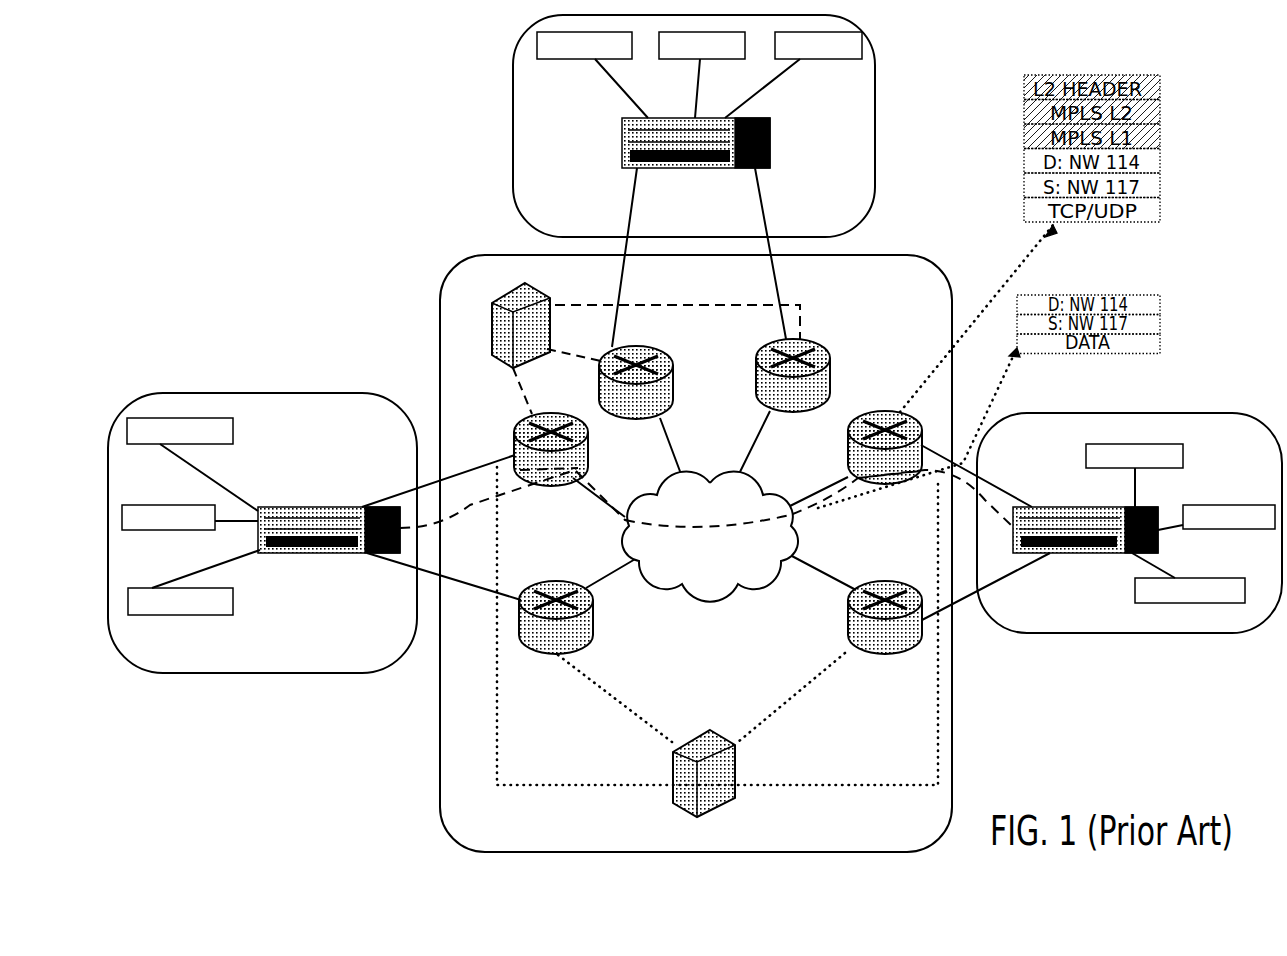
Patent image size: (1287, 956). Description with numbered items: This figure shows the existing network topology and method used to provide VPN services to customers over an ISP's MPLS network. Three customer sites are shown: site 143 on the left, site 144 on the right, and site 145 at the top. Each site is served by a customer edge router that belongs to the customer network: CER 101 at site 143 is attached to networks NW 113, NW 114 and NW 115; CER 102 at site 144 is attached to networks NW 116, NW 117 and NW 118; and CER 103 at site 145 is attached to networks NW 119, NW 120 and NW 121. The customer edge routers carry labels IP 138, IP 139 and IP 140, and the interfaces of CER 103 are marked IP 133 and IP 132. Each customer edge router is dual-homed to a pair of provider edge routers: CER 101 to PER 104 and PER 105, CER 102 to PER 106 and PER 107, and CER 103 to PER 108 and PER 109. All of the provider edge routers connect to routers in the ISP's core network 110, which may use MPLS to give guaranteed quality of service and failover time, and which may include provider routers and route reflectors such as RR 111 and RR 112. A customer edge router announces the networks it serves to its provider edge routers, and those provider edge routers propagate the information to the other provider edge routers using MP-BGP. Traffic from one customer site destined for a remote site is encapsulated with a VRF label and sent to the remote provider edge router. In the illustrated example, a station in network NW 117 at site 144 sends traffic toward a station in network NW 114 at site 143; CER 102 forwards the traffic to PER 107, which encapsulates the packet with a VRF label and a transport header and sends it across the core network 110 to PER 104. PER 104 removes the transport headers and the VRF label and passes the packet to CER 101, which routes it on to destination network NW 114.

The customer edge router 101 is at (329, 544).
The customer edge router 102 is at (1085, 544).
The customer edge router 103 is at (696, 157).
The provider edge router 104 is at (551, 464).
The provider edge router 105 is at (556, 630).
The provider edge router 106 is at (885, 632).
The provider edge router 107 is at (885, 463).
The provider edge router 108 is at (793, 390).
The provider edge router 109 is at (636, 396).
The core network 110 is at (710, 536).
The route reflector 111 is at (522, 314).
The route reflector 112 is at (704, 787).
The network 113 is at (192, 464).
The network 114 is at (190, 517).
The network 115 is at (194, 582).
The network 116 is at (1134, 475).
The network 117 is at (1216, 517).
The network 118 is at (1188, 578).
The network 119 is at (584, 45).
The network 120 is at (702, 45).
The network 121 is at (818, 45).
The IP address 132 is at (800, 186).
The IP address 133 is at (591, 186).
The IP address 138 is at (312, 595).
The IP address 139 is at (1086, 596).
The IP address 140 is at (800, 126).
The site 143 is at (160, 393).
The site 144 is at (1197, 413).
The site 145 is at (866, 50).